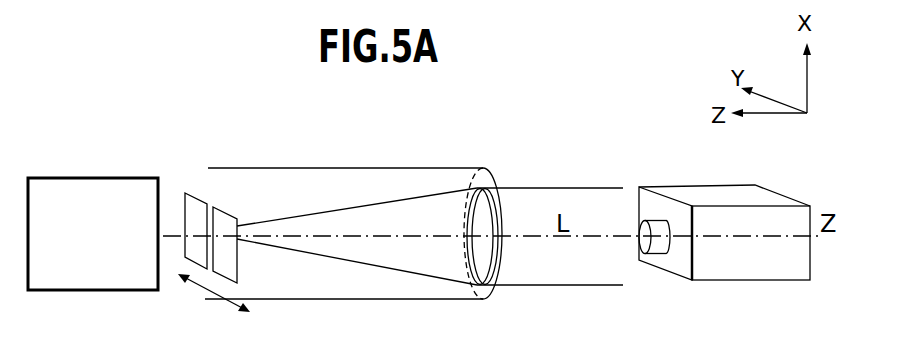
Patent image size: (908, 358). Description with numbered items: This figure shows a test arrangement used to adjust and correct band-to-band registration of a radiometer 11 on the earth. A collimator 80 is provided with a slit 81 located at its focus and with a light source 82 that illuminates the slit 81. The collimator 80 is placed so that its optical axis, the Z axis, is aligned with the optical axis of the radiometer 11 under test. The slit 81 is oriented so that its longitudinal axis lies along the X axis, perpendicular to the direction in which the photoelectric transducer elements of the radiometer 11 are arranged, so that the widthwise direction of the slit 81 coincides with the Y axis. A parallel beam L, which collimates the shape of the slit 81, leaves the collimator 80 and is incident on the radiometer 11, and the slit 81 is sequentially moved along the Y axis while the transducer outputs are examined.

The light source 82 is at (102, 177).
The slit 81 is at (197, 192).
The collimator 80 is at (300, 167).
The radiometer 11 is at (683, 187).